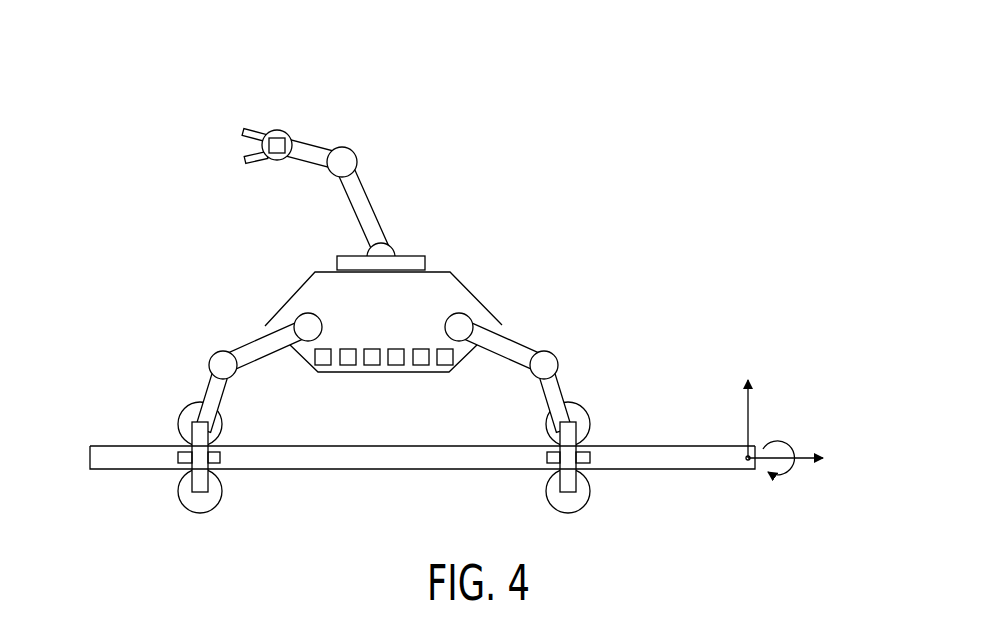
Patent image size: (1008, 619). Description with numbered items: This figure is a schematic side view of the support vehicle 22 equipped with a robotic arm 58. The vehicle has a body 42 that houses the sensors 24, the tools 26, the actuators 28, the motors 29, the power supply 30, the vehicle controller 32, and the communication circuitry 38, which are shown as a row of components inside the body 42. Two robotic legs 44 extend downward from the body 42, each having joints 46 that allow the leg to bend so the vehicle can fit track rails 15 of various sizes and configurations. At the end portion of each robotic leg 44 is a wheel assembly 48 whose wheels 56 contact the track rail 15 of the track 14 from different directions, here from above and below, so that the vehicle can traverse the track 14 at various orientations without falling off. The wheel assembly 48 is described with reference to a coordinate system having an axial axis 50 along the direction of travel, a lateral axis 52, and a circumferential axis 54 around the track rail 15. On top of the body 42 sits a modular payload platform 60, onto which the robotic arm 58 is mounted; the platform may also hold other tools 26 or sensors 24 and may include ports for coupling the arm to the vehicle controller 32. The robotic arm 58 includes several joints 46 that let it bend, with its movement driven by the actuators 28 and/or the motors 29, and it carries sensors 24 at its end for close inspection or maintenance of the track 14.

The track 14 is at (682, 475).
The track rail 15 is at (690, 445).
The support vehicle 22 is at (565, 149).
The sensors 24 is at (278, 161).
The tools 26 is at (323, 366).
The actuators 28 is at (346, 366).
The motors 29 is at (373, 366).
The power supply 30 is at (397, 366).
The vehicle controller 32 is at (422, 366).
The communication circuitry 38 is at (446, 366).
The body 42 is at (478, 299).
The robotic legs 44 is at (259, 332).
The joints 46 is at (283, 131).
The wheel assembly 48 is at (168, 426).
The axial axis 50 is at (800, 451).
The lateral axis 52 is at (747, 424).
The circumferential axis 54 is at (790, 474).
The wheels 56 is at (220, 432).
The robotic arm 58 is at (388, 175).
The modular payload platform 60 is at (427, 264).